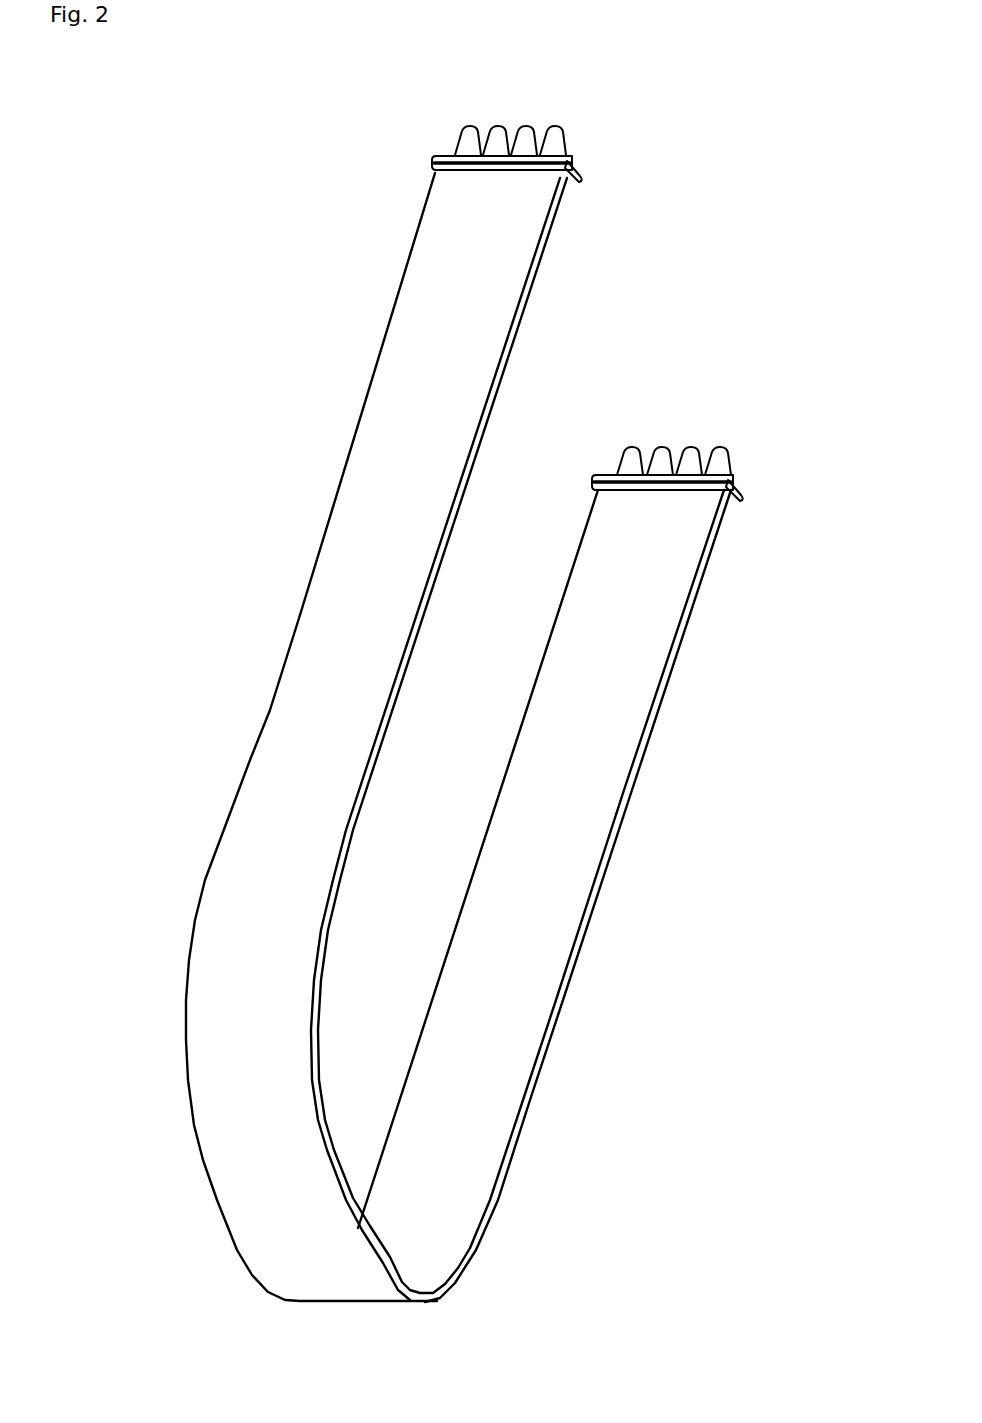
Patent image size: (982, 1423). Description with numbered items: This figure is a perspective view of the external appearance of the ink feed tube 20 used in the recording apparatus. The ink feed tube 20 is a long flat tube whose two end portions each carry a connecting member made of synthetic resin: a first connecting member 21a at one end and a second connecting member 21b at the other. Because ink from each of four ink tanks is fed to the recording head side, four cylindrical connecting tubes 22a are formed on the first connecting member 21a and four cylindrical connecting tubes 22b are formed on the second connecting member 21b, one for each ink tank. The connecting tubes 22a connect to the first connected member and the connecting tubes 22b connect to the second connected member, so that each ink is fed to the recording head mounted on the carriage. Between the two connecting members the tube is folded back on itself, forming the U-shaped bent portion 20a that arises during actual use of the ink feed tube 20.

The ink feed tube 20 is at (391, 737).
The U-shaped bent portion 20a is at (204, 1240).
The first connecting member 21a is at (581, 159).
The second connecting member 21b is at (740, 478).
The connecting tubes 22a is at (587, 121).
The connecting tubes 22b is at (748, 440).